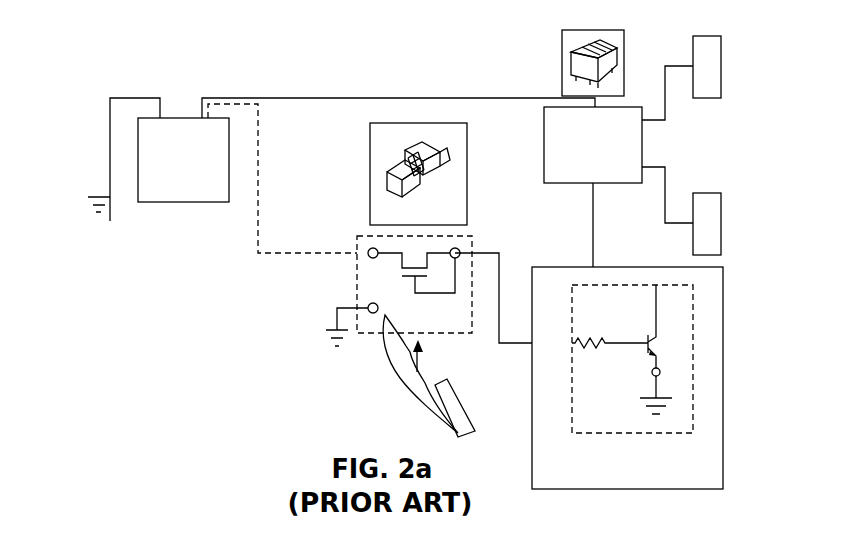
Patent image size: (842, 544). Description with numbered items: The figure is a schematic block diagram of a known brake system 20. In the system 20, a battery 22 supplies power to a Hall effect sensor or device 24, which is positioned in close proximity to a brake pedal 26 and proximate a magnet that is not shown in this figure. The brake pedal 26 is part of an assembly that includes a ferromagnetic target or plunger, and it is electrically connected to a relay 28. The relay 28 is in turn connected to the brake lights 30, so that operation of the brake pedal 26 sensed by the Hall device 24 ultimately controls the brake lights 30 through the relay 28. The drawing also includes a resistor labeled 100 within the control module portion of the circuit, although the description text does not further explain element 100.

The electrical system (prior art) 20 is at (106, 60).
The battery 22 is at (183, 118).
The ignition switch 24 is at (357, 275).
The brake pedal 26 is at (410, 392).
The relay 28 is at (544, 143).
The loads 30 is at (721, 66).
The resistor RI 100 is at (610, 322).